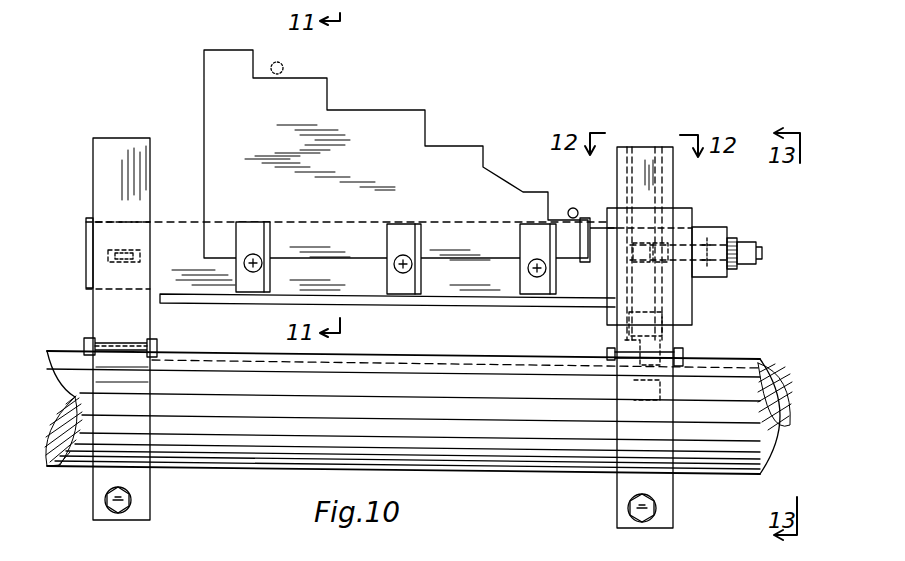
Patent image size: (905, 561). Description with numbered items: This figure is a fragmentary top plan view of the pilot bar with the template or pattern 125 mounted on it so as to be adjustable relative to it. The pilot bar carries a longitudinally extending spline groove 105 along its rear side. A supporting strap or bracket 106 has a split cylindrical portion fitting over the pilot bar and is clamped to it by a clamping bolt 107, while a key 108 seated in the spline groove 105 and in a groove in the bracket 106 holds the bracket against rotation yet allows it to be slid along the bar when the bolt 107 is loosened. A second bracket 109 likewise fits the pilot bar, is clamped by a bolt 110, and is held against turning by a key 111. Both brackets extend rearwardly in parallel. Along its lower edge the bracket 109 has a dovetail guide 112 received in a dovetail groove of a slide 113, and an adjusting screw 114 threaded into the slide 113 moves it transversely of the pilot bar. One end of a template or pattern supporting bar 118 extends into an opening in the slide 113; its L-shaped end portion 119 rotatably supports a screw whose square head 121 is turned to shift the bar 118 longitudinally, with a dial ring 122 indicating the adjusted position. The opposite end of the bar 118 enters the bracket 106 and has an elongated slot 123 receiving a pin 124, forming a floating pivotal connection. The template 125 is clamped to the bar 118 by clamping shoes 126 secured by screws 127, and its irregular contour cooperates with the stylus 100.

The feeler or stylus 100 is at (278, 62).
The spline groove 105 is at (800, 336).
The supporting strap or bracket 106 is at (150, 205).
The clamping bolt 107 is at (128, 512).
The key 108 is at (153, 346).
The second bracket 109 is at (670, 452).
The bolt 110 is at (656, 510).
The key 111 is at (672, 352).
The dovetail guide 112 is at (652, 158).
The slide 113 is at (610, 325).
The adjusting screw 114 is at (685, 344).
The template or pattern supporting bar 118 is at (590, 218).
The L-shaped end portion 119 is at (720, 226).
The square head 121 is at (749, 254).
The dial ring 122 is at (745, 268).
The longitudinally elongated slot 123 is at (142, 254).
The pin 124 is at (110, 256).
The template or pattern 125 is at (331, 100).
The clamping shoes 126 is at (415, 242).
The screws 127 is at (394, 266).